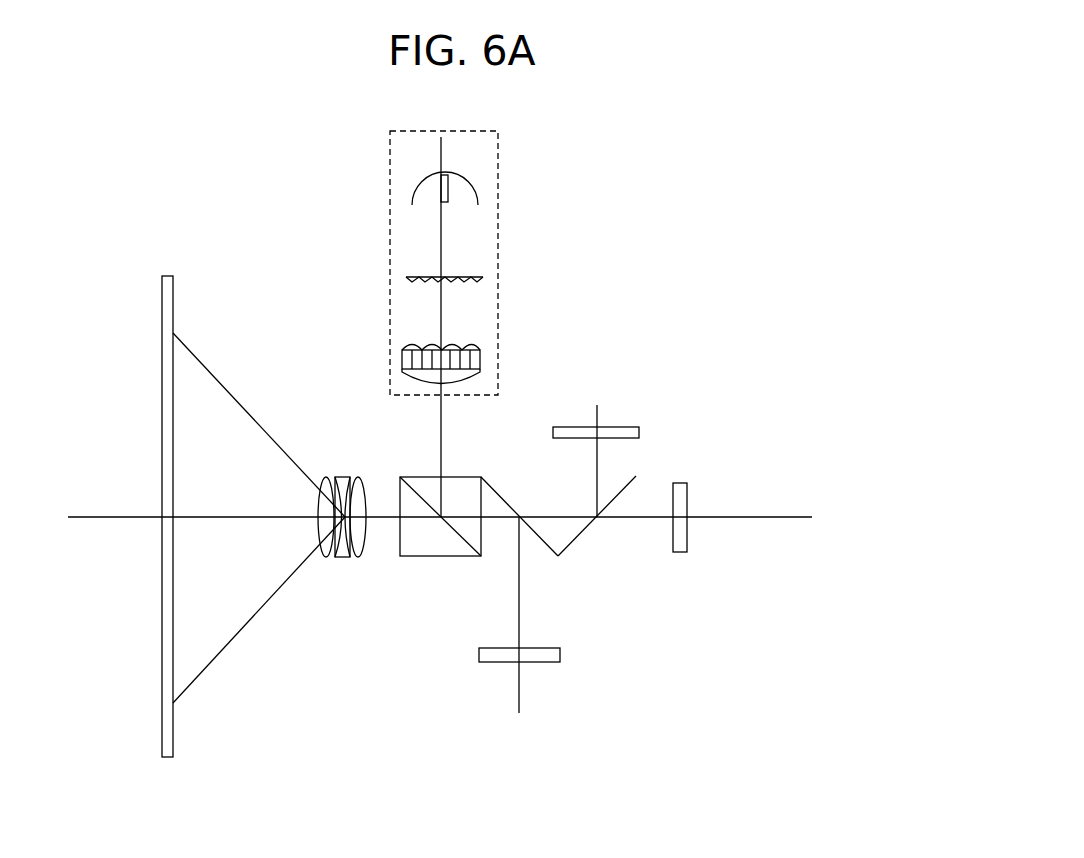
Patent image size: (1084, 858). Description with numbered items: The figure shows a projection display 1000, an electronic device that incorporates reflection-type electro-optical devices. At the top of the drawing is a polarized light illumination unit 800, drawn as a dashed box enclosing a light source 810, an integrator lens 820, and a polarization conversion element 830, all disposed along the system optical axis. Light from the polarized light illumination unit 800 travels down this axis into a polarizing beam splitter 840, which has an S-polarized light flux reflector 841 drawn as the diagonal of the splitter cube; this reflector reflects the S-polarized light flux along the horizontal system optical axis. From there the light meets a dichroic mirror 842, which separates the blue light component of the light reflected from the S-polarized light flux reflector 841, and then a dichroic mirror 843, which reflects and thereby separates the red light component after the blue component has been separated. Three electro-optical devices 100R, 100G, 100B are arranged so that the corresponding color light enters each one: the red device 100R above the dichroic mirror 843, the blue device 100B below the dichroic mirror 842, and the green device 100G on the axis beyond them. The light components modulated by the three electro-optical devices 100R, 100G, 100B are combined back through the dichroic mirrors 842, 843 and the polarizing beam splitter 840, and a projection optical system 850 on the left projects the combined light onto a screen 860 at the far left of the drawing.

The projection display 1000 is at (738, 478).
The polarized light illumination unit 800 is at (488, 163).
The light source 810 is at (470, 182).
The integrator lens 820 is at (475, 276).
The polarization conversion element 830 is at (480, 357).
The polarizing beam splitter 840 is at (412, 550).
The S-polarized light flux reflector 841 is at (460, 547).
The dichroic mirror 842 is at (549, 551).
The dichroic mirror 843 is at (593, 540).
The projection optical system 850 is at (366, 466).
The screen 860 is at (168, 728).
The electro-optical device 100R is at (625, 431).
The electro-optical device 100G is at (684, 535).
The electro-optical device 100B is at (495, 658).